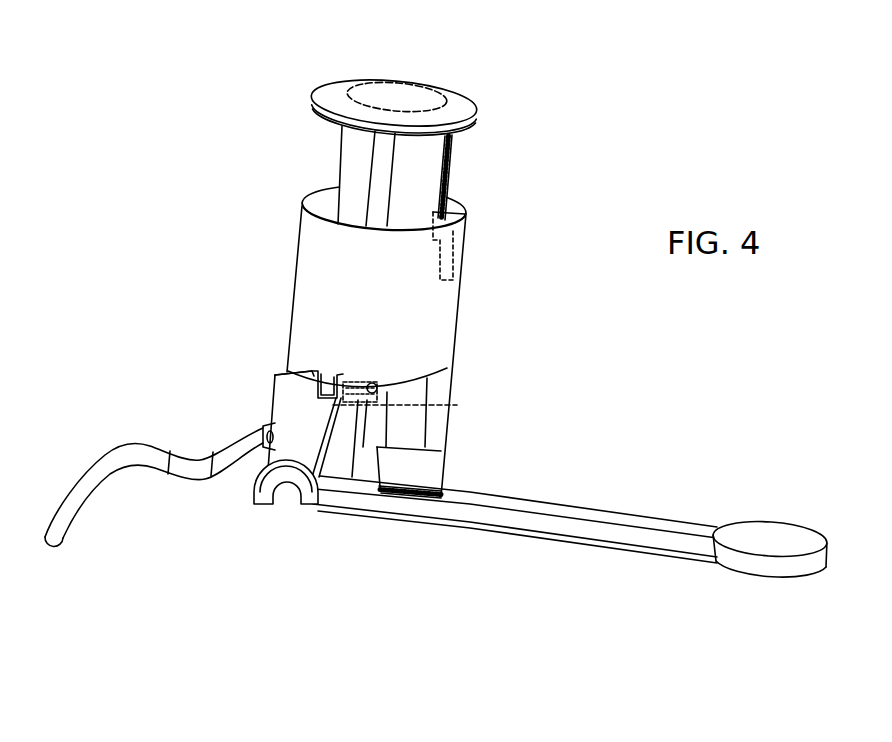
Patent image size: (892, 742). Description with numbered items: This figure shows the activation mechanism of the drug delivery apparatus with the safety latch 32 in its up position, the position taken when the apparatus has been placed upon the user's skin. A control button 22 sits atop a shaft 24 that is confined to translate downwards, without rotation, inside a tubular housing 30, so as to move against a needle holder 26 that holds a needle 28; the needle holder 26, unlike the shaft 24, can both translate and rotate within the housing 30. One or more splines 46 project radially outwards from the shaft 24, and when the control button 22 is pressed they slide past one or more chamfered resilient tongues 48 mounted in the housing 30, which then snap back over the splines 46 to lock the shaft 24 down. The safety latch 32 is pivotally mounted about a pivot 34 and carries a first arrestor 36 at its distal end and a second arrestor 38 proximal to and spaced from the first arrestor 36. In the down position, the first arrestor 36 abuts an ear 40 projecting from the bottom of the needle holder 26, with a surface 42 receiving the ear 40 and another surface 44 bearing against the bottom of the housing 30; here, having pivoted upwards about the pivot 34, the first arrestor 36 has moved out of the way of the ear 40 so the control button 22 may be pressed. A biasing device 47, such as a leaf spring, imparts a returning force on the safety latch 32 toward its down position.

The control button 22 is at (408, 98).
The shaft 24 is at (345, 165).
The needle holder 26 is at (395, 380).
The needle 28 is at (357, 455).
The housing 30 is at (447, 305).
The safety latch 32 is at (737, 527).
The pivot 34 is at (288, 497).
The first arrestor 36 is at (290, 417).
The second arrestor 38 is at (432, 468).
The ear 40 is at (457, 405).
The surface 42 is at (318, 371).
The surface 44 is at (287, 370).
The splines 46 is at (452, 167).
The biasing device 47 is at (97, 457).
The chamfered resilient tongues 48 is at (455, 252).